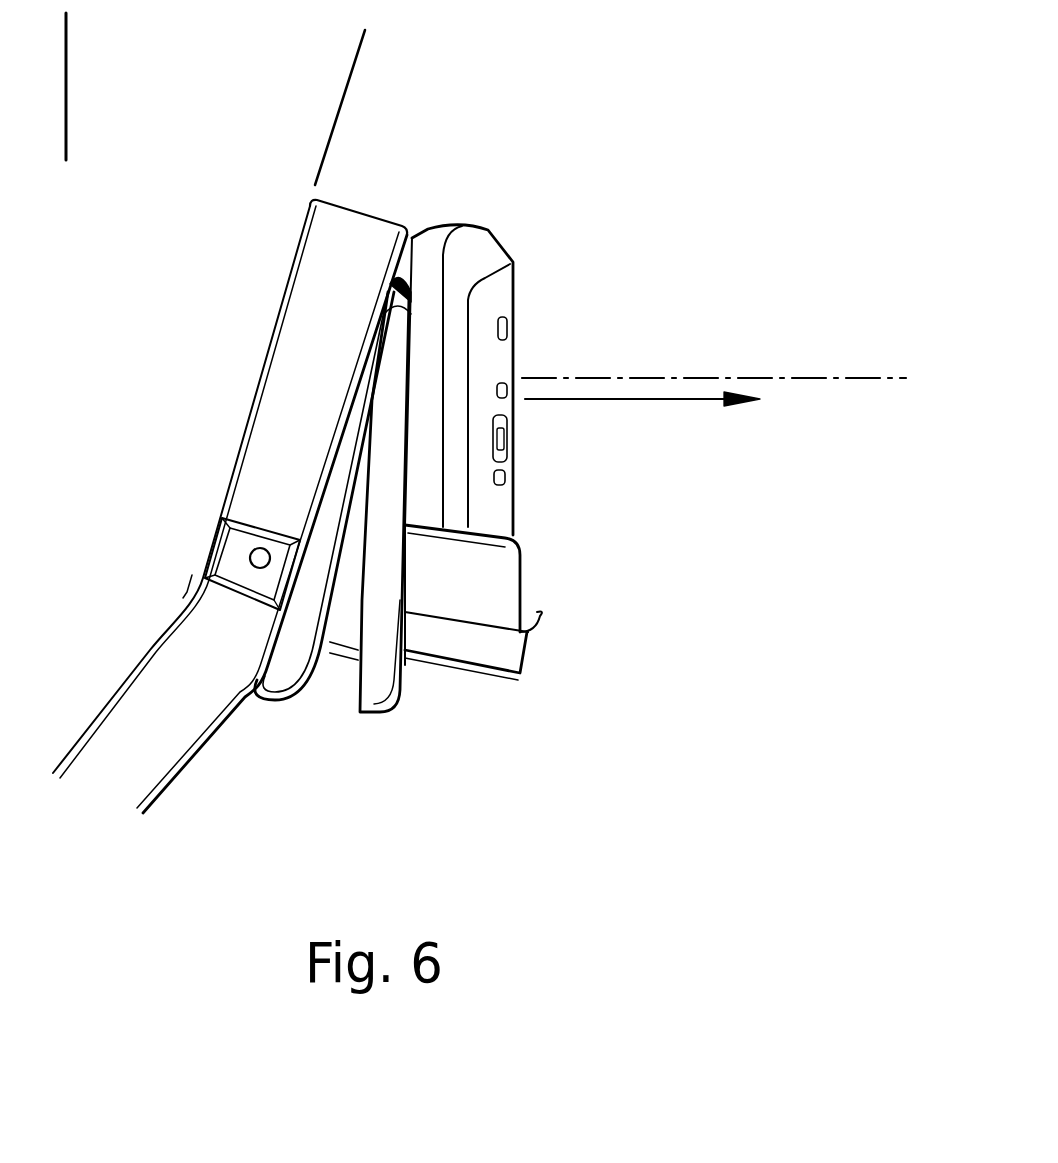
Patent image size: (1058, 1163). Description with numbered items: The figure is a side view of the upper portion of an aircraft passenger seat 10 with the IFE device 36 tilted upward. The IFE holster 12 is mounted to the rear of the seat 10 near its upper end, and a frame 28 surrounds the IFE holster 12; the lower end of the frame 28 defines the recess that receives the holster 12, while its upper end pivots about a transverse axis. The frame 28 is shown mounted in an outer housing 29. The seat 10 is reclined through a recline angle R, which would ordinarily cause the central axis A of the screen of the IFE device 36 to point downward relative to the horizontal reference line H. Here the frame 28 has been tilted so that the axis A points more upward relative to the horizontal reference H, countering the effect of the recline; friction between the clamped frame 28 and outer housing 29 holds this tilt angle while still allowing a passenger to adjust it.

The aircraft passenger seat 10 is at (379, 188).
The IFE holster 12 is at (542, 570).
The frame 28 is at (405, 700).
The outer housing 29 is at (287, 690).
The IFE device 36 is at (485, 235).
The seat recline angle R is at (110, 40).
The horizontal reference line H is at (710, 378).
The central axis of the screen A is at (613, 399).